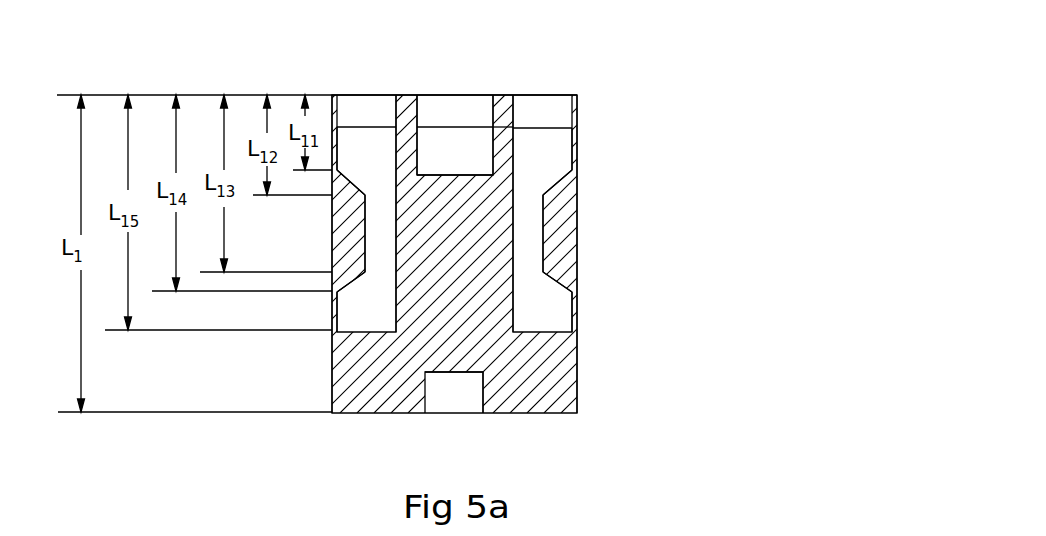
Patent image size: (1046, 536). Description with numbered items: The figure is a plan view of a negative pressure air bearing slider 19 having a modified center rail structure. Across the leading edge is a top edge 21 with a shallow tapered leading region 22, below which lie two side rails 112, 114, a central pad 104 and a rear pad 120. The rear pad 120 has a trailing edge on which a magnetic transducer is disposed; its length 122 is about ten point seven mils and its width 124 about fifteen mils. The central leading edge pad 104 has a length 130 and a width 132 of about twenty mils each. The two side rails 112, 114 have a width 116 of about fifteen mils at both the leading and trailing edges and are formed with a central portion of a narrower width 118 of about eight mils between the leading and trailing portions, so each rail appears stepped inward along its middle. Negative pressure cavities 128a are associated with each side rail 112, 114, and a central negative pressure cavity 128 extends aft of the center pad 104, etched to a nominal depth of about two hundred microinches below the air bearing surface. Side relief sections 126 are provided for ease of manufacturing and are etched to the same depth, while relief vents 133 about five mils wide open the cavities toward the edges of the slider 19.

The semiconductor device structure 19 is at (575, 423).
The top surface 21 is at (463, 95).
The top layer 22 is at (548, 117).
The central pad 104 is at (471, 166).
The side rail 112 is at (386, 327).
The side rail 114 is at (562, 328).
The side rail width 116 is at (545, 95).
The narrower central portion width 118 is at (530, 224).
The rear pad 120 is at (472, 407).
The rear pad length 122 is at (490, 395).
The rear pad width 124 is at (467, 371).
The relief sections 126 is at (575, 133).
The central negative pressure cavity 128 is at (475, 298).
The negative pressure cavities 128a is at (562, 247).
The central pad length 130 is at (497, 157).
The central pad width 132 is at (473, 177).
The relief vents 133 is at (507, 95).